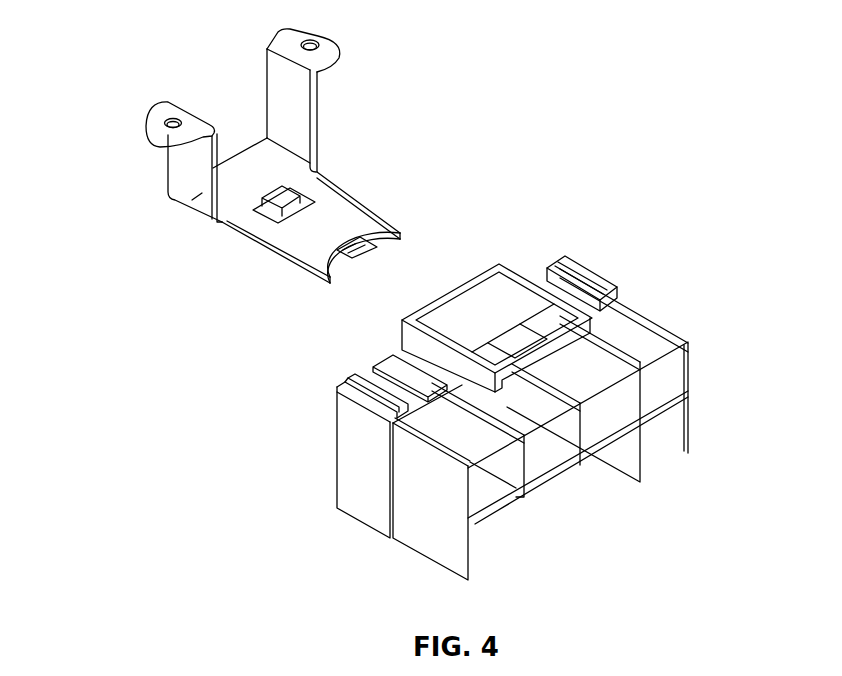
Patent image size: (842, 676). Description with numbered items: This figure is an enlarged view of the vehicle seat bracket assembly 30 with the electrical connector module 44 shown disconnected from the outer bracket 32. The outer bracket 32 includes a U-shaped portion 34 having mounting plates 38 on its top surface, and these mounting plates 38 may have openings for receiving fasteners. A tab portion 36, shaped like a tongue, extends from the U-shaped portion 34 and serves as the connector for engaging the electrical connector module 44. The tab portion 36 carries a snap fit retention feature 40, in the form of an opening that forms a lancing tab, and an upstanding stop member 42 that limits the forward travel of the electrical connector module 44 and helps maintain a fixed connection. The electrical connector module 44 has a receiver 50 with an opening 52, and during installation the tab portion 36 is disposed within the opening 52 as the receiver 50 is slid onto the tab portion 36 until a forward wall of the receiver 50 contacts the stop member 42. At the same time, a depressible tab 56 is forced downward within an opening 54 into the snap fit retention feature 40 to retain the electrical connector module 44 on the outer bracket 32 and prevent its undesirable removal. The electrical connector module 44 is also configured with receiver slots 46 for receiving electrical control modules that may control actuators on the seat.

The vehicle seat bracket assembly 30 is at (634, 100).
The outer bracket 32 is at (164, 173).
The U-shaped portion 34 is at (318, 98).
The tab portion 36 is at (338, 214).
The mounting plates 38 is at (330, 46).
The snap fit retention feature 40 is at (357, 258).
The stop member 42 is at (273, 190).
The electrical connector module 44 is at (690, 328).
The receiver slots 46 is at (681, 433).
The receiver 50 is at (406, 348).
The opening 52 is at (462, 272).
The opening 54 is at (523, 338).
The depressible tab 56 is at (576, 283).